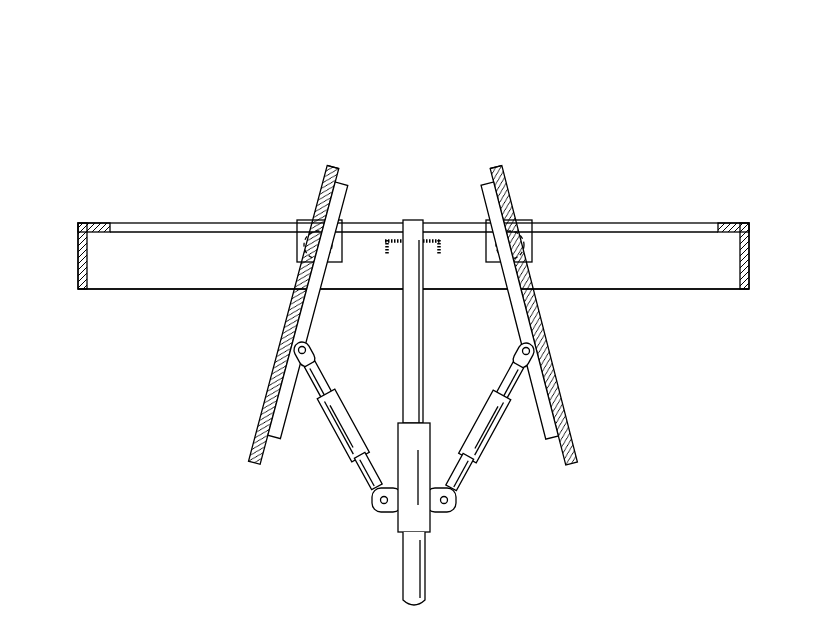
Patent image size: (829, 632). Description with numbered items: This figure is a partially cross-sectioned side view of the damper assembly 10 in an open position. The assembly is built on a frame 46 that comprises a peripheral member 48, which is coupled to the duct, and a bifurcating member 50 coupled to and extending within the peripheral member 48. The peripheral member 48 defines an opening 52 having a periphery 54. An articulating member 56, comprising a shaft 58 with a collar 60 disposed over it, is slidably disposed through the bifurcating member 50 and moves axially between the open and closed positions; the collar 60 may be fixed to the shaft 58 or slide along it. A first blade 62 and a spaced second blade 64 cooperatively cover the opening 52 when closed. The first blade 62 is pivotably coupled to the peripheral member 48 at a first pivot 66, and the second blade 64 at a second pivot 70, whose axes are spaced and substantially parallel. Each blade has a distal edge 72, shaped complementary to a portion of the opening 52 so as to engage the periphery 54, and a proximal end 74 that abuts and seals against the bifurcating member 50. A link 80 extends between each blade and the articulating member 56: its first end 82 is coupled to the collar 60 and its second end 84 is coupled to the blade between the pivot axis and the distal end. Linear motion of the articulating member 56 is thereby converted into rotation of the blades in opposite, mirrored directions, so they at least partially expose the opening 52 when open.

The damper assembly 10 is at (739, 177).
The frame 46 is at (188, 262).
The peripheral member 48 is at (79, 229).
The bifurcating member 50 is at (388, 243).
The opening 52 is at (718, 224).
The periphery 54 is at (87, 278).
The articulating member 56 is at (415, 218).
The shaft 58 is at (425, 357).
The collar 60 is at (418, 513).
The first blade 62 is at (268, 398).
The second blade 64 is at (552, 393).
The first pivot 66 is at (300, 247).
The second pivot 70 is at (527, 247).
The distal edge 72 is at (251, 468).
The proximal end 74 is at (333, 163).
The link 80 is at (350, 443).
The first end 82 is at (377, 505).
The second end 84 is at (300, 353).